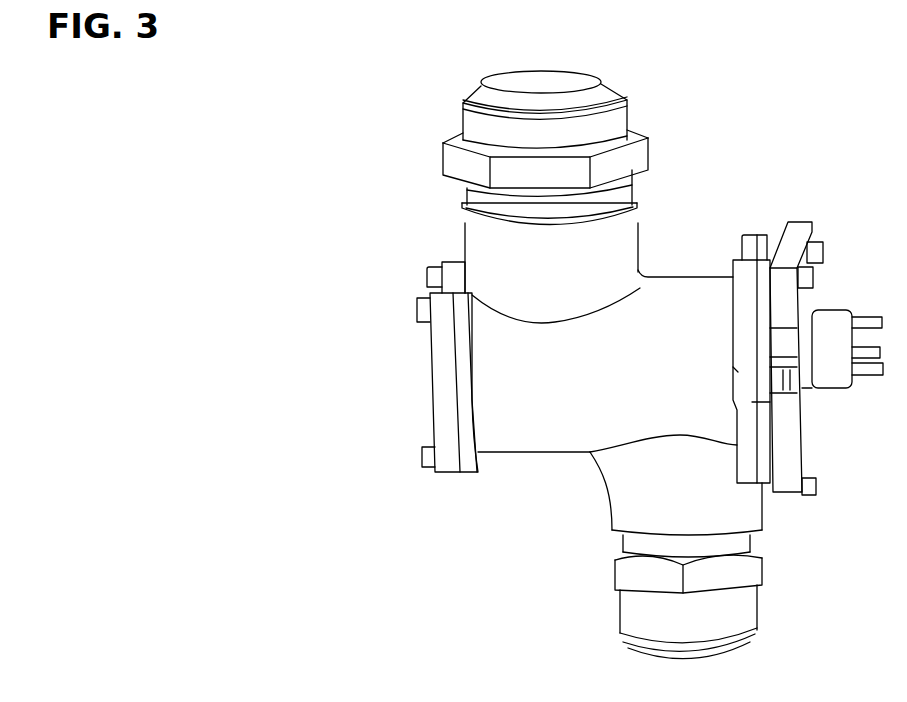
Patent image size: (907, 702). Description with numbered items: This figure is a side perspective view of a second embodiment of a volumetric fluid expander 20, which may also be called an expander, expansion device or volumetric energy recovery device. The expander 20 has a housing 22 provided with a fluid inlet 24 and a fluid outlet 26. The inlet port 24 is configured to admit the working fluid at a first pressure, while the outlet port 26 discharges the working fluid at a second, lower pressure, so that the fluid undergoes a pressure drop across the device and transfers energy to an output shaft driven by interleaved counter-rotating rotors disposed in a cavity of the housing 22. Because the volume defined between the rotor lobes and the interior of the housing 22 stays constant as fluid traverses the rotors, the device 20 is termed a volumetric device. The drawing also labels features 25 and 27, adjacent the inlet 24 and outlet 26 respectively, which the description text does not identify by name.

The volumetric fluid expander 20 is at (328, 170).
The housing 22 is at (503, 453).
The fluid inlet 24 is at (463, 237).
The cap 25 is at (462, 123).
The fluid outlet 26 is at (622, 512).
The outlet fitting 27 is at (630, 623).